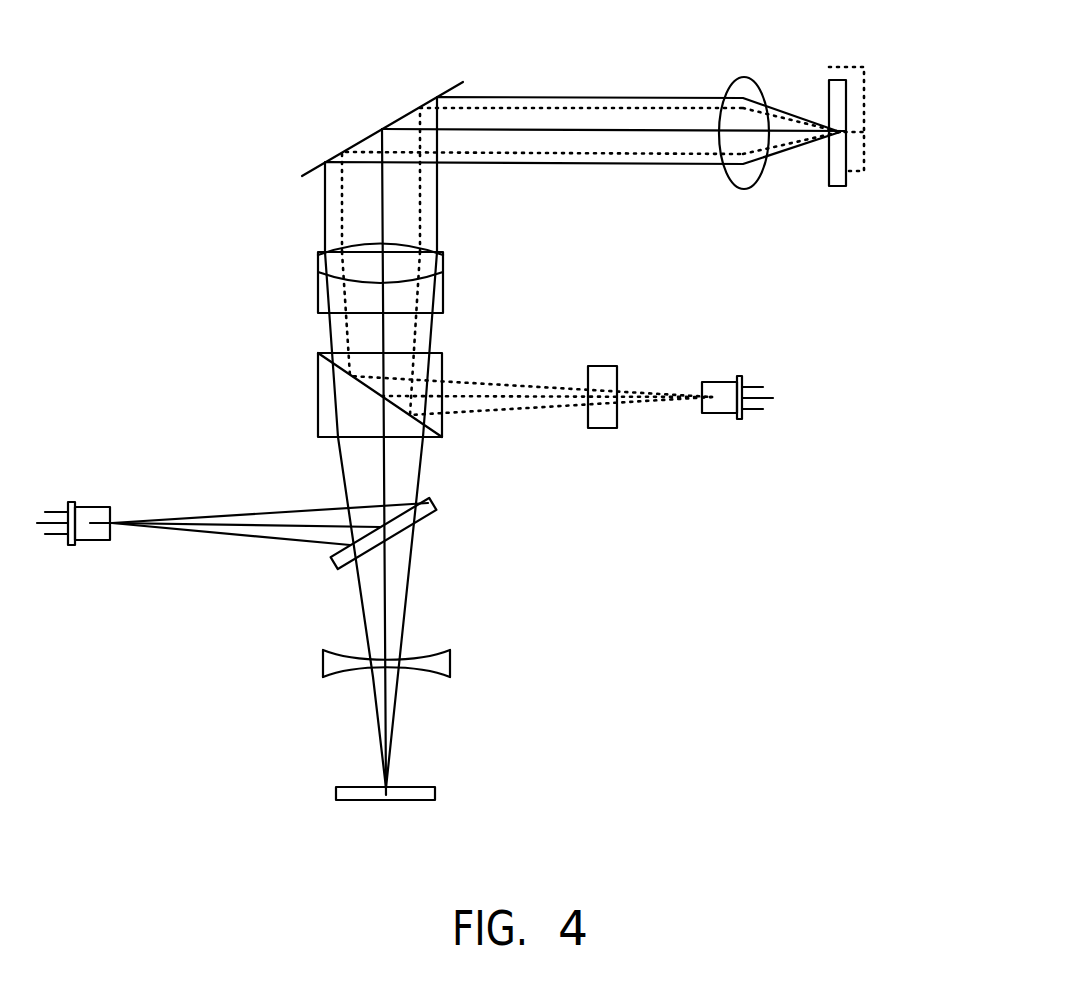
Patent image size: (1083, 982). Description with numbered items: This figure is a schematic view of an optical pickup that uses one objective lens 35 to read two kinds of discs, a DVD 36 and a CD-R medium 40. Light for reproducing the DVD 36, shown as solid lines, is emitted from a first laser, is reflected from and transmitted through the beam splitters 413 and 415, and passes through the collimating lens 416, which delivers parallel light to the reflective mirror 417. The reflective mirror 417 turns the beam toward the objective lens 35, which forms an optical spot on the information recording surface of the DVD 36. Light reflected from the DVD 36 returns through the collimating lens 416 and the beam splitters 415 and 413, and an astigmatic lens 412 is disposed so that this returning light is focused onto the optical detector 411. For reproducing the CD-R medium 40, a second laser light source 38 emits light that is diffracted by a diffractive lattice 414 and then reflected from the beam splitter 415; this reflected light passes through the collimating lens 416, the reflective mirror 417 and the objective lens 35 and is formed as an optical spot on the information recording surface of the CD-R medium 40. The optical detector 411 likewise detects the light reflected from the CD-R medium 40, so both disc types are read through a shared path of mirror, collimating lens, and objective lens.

The objective lens 35 is at (747, 78).
The DVD 36 is at (840, 187).
The CD-R medium 40 is at (870, 88).
The laser light source 38 is at (753, 380).
The optical detector 411 is at (415, 788).
The astigmatic lens 412 is at (450, 650).
The beam splitter 413 is at (437, 505).
The diffractive lattice 414 is at (605, 365).
The beam splitter 415 is at (442, 360).
The collimating lens 416 is at (443, 270).
The reflective mirror 417 is at (382, 128).